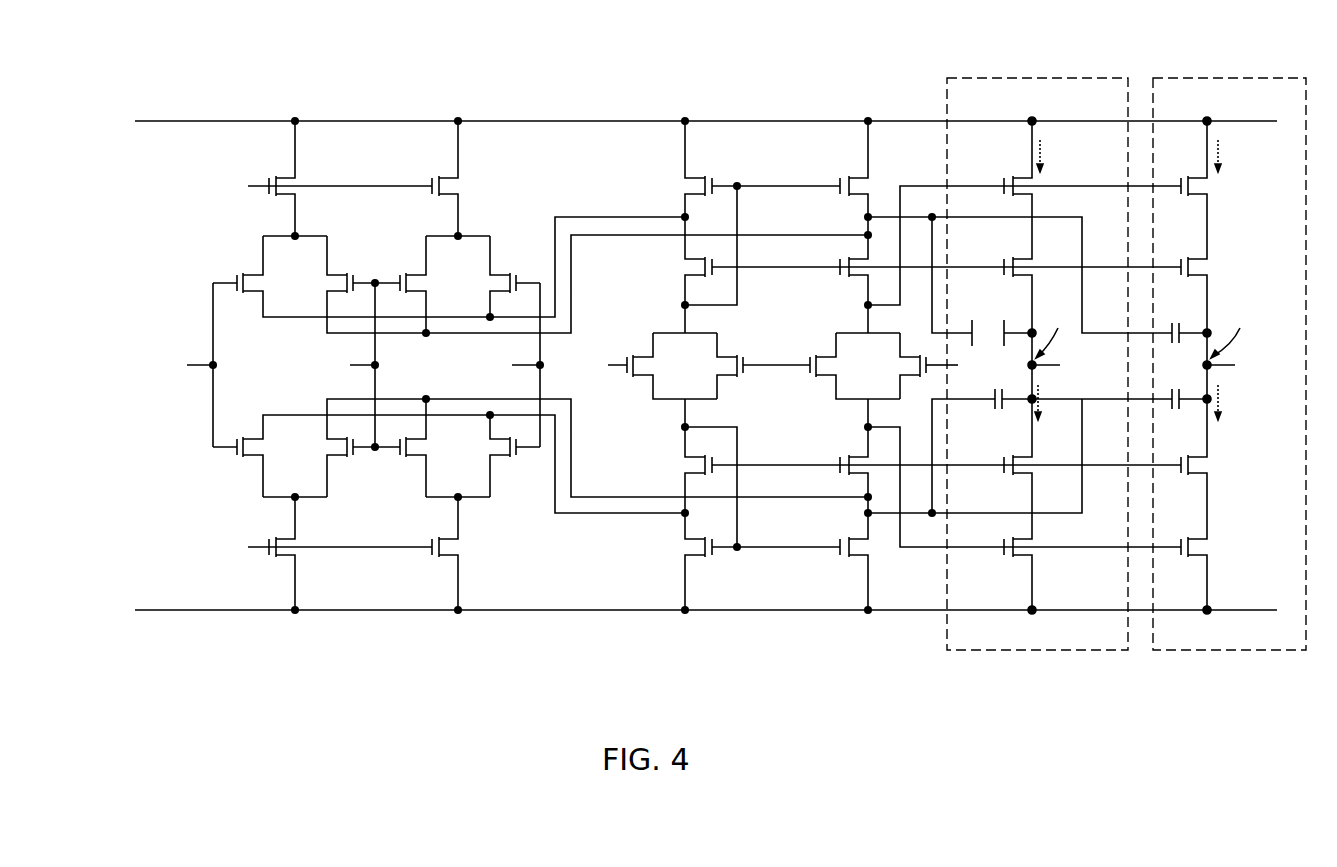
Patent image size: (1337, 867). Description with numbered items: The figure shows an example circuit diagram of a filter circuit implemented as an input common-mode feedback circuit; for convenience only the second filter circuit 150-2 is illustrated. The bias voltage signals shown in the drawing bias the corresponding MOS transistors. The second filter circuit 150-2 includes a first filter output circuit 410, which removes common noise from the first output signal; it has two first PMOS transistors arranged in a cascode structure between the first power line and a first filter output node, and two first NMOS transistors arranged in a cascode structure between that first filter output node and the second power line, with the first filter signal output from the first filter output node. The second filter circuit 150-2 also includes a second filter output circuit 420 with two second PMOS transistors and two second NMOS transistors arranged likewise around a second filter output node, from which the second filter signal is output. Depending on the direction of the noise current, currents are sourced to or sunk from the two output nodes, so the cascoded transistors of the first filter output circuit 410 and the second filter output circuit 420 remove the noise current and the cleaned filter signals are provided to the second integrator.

The second filter circuit 150-2 is at (846, 88).
The first filter output circuit 410 is at (1037, 78).
The second filter output circuit 420 is at (1228, 78).